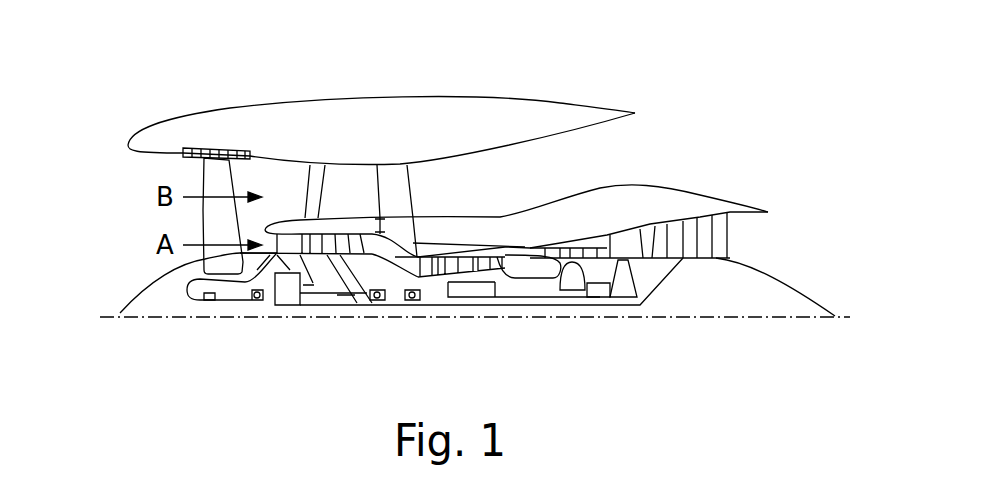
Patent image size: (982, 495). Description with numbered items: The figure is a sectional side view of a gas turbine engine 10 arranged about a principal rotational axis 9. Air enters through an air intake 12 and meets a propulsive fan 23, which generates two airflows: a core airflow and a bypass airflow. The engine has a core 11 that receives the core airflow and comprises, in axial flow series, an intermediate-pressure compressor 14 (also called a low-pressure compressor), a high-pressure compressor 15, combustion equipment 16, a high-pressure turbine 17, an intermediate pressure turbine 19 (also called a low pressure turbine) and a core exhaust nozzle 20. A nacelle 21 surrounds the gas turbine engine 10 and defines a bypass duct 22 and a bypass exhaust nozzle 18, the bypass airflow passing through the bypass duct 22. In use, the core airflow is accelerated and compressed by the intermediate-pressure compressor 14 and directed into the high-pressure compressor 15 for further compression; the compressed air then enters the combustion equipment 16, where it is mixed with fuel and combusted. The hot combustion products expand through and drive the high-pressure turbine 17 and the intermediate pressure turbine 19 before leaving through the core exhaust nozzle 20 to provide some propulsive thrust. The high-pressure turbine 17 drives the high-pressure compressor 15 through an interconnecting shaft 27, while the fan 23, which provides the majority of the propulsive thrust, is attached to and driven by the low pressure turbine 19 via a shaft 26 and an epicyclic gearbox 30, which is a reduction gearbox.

The principal rotational axis 9 is at (738, 318).
The gas turbine engine 10 is at (185, 113).
The core 11 is at (538, 238).
The air intake 12 is at (143, 172).
The intermediate-pressure compressor 14 is at (343, 242).
The high-pressure compressor 15 is at (467, 262).
The combustion equipment 16 is at (527, 266).
The high-pressure turbine 17 is at (580, 250).
The bypass exhaust nozzle 18 is at (720, 110).
The intermediate pressure turbine 19 is at (693, 247).
The core exhaust nozzle 20 is at (768, 245).
The nacelle 21 is at (392, 107).
The bypass duct 22 is at (585, 152).
The propulsive fan 23 is at (207, 229).
The shaft 26 is at (432, 307).
The interconnecting shaft 27 is at (490, 297).
The epicyclic gearbox 30 is at (287, 297).